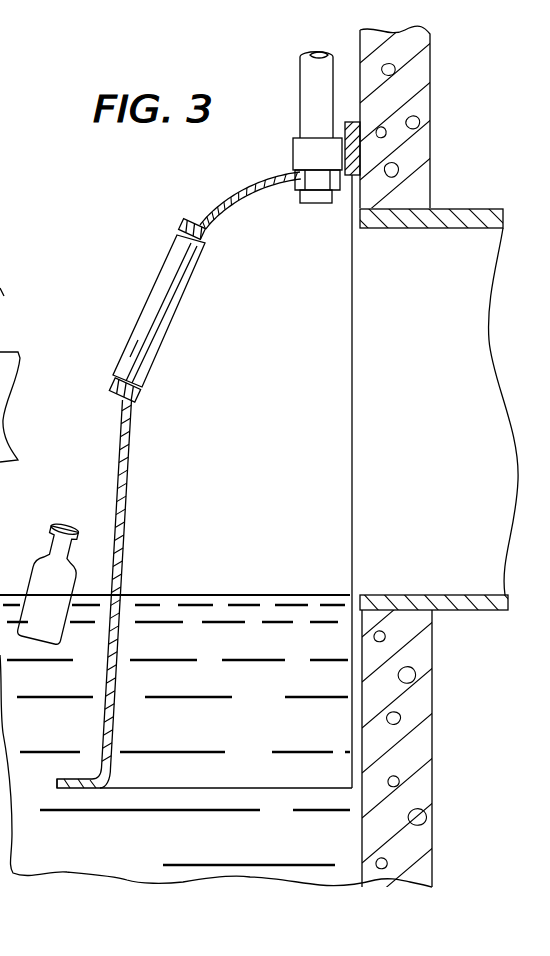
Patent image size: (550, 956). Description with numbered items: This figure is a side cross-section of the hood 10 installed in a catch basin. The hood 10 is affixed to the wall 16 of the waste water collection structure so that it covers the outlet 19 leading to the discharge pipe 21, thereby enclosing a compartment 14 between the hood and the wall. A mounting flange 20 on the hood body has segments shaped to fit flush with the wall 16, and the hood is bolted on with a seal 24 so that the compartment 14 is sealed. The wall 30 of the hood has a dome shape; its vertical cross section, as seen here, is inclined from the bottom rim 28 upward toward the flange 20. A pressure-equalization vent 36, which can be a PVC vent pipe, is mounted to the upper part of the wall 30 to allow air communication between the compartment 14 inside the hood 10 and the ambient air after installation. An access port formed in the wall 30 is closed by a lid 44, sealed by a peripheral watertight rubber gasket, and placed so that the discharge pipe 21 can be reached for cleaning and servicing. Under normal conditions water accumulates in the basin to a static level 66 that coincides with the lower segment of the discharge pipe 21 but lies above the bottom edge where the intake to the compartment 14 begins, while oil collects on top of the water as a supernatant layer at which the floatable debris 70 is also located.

The hood 10 is at (217, 195).
The compartment 14 is at (266, 354).
The wall 16 is at (410, 183).
The outlet 19 is at (338, 486).
The mounting flange 20 is at (312, 130).
The discharge pipe 21 is at (463, 228).
The seal 24 is at (358, 150).
The bottom rim 28 is at (80, 788).
The wall 30 is at (127, 508).
The pressure-equalization vent 36 is at (300, 88).
The lid 44 is at (150, 295).
The static level 66 is at (178, 595).
The floatable debris 70 is at (81, 543).